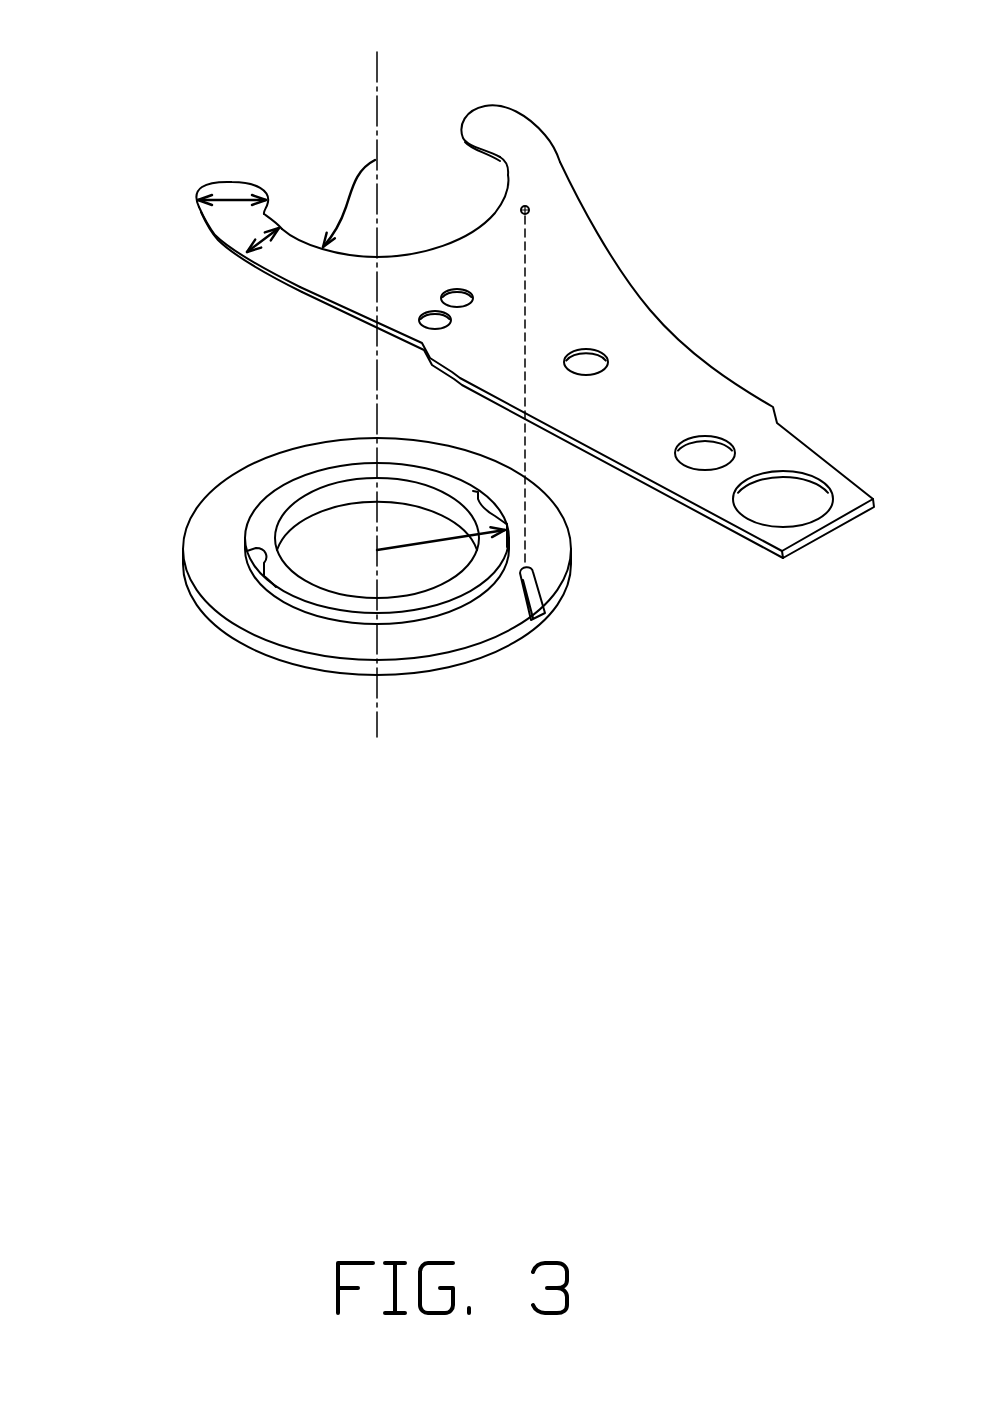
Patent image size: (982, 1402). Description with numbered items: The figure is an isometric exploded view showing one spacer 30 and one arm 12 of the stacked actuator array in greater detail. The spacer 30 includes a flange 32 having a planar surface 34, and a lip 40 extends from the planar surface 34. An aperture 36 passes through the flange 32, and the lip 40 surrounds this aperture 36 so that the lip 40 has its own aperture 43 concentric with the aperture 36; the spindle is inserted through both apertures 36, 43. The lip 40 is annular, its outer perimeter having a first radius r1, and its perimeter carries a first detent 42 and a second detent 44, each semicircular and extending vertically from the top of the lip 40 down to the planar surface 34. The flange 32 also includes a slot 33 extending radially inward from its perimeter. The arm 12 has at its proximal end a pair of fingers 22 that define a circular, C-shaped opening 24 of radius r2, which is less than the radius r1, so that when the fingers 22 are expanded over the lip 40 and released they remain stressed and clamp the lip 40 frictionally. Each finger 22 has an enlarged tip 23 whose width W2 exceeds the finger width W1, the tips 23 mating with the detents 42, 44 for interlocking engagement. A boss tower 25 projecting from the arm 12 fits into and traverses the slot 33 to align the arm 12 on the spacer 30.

The arm 12 is at (665, 377).
The fingers 22 is at (282, 268).
The enlarged tip 23 is at (231, 189).
The opening 24 is at (461, 186).
The boss tower 25 is at (530, 213).
The spacer 30 is at (393, 576).
The flange 32 is at (265, 638).
The slot 33 is at (533, 619).
The planar surface 34 is at (215, 593).
The aperture 36 is at (407, 577).
The lip 40 is at (302, 482).
The first detent 42 is at (253, 553).
The aperture 43 is at (360, 578).
The second detent 44 is at (478, 517).
The first width W1 is at (258, 230).
The second width W2 is at (255, 215).
The first radius r1 is at (441, 535).
The radius r2 is at (342, 203).